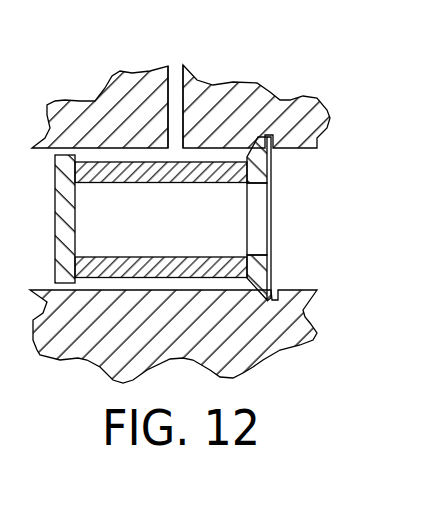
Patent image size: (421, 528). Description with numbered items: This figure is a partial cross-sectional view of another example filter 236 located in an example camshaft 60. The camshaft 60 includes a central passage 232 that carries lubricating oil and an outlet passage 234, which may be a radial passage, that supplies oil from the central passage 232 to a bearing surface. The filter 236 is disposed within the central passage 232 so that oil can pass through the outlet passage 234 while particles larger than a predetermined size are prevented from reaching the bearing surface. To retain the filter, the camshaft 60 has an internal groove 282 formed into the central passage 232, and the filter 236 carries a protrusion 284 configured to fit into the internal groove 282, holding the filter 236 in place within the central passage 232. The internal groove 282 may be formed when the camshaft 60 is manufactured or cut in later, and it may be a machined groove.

The camshaft 60 is at (316, 118).
The outlet passage 234 is at (176, 68).
The central passage 232 is at (202, 219).
The filter 236 is at (268, 171).
The protrusion 284 is at (271, 288).
The internal groove 282 is at (303, 319).